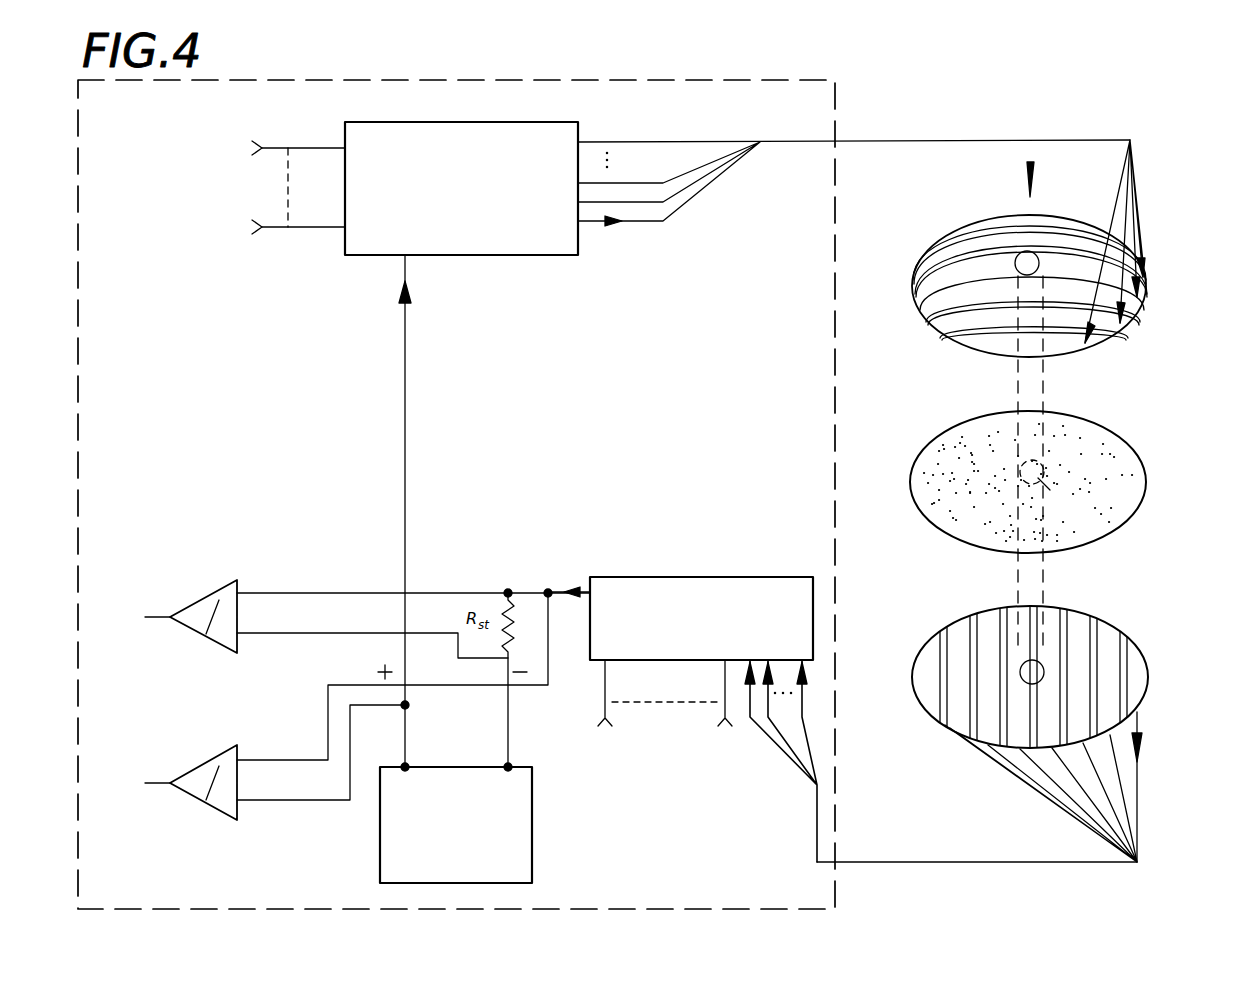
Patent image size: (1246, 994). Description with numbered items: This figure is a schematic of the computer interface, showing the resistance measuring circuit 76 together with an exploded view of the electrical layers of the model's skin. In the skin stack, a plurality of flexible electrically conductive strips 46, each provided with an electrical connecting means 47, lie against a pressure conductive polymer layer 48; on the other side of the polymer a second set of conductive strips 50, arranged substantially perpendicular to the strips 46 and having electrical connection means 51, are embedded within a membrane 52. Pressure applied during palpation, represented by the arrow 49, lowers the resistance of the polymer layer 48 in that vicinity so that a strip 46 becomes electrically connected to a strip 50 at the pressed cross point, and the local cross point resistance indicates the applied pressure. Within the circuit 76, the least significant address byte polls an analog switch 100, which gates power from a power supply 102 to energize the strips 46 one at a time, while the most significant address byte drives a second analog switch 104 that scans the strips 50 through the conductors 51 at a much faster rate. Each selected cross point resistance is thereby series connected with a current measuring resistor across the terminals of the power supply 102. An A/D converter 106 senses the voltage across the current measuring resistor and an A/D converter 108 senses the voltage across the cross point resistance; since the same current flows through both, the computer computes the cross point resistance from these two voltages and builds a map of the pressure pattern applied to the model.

The resistance measuring circuit 76 is at (779, 82).
The analog switch 100 is at (501, 242).
The power supply 102 is at (532, 858).
The second analog switch 104 is at (781, 577).
The A/D converter 106 is at (229, 578).
The A/D converter 108 is at (230, 745).
The flexible electrically conductive strips 46 is at (938, 297).
The electrical connecting means 47 is at (1142, 216).
The pressure conductive polymer layer 48 is at (1147, 478).
The arrow 49 is at (1024, 180).
The flexible electrically conductive strips 50 is at (1135, 662).
The electrical connection means 51 is at (1140, 792).
The membrane 52 is at (1064, 675).